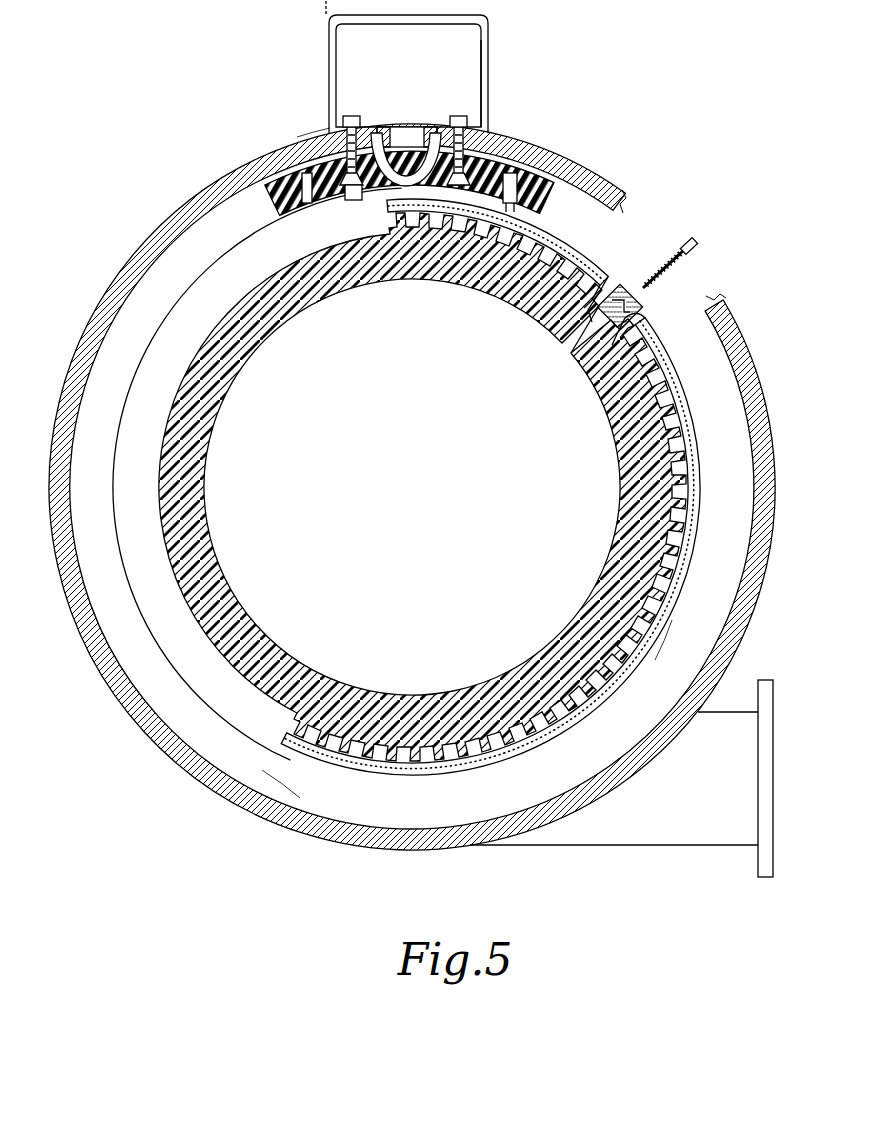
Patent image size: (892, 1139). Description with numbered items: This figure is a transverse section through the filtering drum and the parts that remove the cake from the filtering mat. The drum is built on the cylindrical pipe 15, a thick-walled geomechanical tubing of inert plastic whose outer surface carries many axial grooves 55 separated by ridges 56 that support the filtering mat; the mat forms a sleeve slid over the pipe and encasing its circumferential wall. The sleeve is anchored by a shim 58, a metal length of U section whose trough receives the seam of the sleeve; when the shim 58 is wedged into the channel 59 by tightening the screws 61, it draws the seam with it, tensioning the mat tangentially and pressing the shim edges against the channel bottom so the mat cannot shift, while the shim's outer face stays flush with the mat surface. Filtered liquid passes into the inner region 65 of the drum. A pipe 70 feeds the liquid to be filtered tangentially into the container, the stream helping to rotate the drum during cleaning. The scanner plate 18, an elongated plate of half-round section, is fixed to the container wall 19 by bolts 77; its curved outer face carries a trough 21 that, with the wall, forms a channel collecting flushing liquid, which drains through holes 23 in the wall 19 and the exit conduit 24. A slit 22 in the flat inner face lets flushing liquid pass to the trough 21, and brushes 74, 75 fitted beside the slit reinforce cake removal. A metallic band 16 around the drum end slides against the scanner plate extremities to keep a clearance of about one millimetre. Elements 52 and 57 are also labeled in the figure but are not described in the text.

The cylindrical pipe 15 is at (603, 562).
The metallic band 16 is at (228, 268).
The scanner plate 18 is at (487, 135).
The container wall 19 is at (297, 137).
The trough 21 is at (370, 128).
The slit 22 is at (440, 133).
The holes 23 is at (401, 133).
The exit conduit 24 is at (437, 40).
The housing inner surface 52 is at (260, 776).
The grooves 55 is at (674, 580).
The ridges 56 is at (706, 458).
The band dotted layer 57 is at (670, 627).
The shim 58 is at (647, 320).
The channel 59 is at (588, 352).
The screws 61 is at (670, 256).
The inner region 65 is at (263, 420).
The pipe 70 is at (707, 822).
The brush 74 is at (302, 195).
The brush 75 is at (517, 196).
The bolts 77 is at (458, 115).